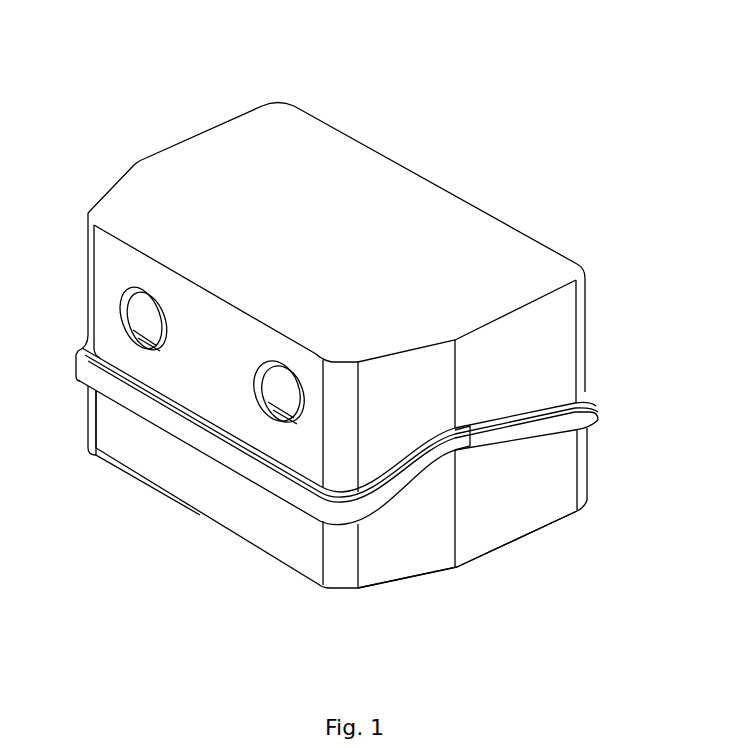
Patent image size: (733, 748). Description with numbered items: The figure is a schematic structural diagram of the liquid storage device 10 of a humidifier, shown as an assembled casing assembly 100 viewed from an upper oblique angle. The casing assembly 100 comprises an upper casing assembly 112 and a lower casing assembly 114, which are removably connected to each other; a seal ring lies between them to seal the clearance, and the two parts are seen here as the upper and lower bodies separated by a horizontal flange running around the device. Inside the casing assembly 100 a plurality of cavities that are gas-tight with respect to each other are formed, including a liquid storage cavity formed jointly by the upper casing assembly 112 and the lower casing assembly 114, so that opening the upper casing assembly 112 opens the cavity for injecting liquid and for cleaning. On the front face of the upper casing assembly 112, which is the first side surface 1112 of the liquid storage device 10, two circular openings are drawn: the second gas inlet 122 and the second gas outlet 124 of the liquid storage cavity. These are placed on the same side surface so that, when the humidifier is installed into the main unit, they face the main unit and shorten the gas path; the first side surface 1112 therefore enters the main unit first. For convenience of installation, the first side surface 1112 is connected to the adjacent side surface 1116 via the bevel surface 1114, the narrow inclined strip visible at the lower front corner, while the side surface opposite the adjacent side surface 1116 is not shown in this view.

The liquid storage device 10 is at (144, 33).
The casing assembly 100 is at (468, 228).
The upper casing assembly 112 is at (585, 337).
The lower casing assembly 114 is at (587, 467).
The second gas inlet 122 is at (278, 390).
The second gas outlet 124 is at (133, 308).
The first side surface 1112 is at (108, 447).
The bevel surface 1114 is at (413, 553).
The adjacent side surface 1116 is at (512, 525).